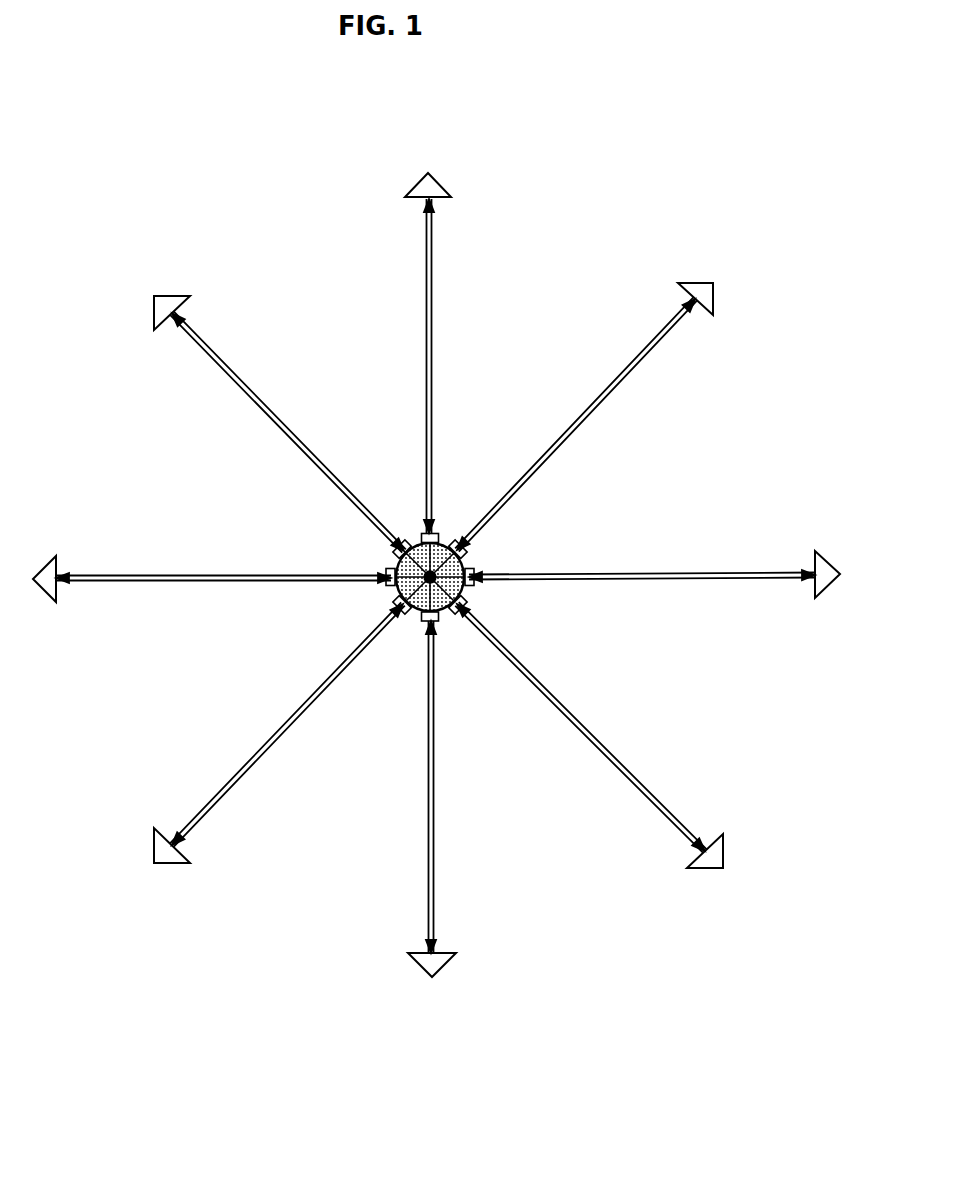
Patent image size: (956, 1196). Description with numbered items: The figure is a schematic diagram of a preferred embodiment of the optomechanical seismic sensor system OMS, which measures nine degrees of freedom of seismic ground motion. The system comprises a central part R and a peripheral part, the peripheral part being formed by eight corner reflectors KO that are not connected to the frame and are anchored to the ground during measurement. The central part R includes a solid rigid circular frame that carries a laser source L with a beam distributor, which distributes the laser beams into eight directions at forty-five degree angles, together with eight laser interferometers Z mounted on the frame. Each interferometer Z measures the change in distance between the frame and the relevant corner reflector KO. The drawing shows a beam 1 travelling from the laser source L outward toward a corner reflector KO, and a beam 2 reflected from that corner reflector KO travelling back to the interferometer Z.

The optomechanical seismic sensor system OMS is at (259, 190).
The corner reflector KO is at (605, 410).
The central part R is at (441, 539).
The laser interferometer Z is at (481, 562).
The laser source L is at (448, 578).
The beam 1 is at (665, 585).
The beam 2 is at (629, 562).